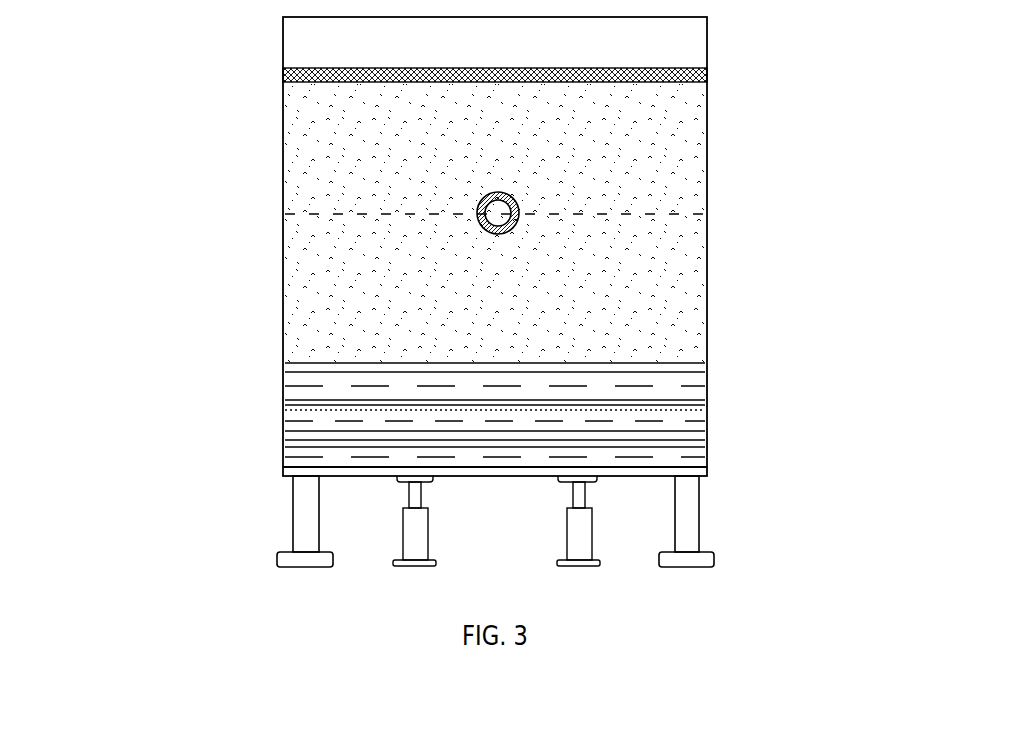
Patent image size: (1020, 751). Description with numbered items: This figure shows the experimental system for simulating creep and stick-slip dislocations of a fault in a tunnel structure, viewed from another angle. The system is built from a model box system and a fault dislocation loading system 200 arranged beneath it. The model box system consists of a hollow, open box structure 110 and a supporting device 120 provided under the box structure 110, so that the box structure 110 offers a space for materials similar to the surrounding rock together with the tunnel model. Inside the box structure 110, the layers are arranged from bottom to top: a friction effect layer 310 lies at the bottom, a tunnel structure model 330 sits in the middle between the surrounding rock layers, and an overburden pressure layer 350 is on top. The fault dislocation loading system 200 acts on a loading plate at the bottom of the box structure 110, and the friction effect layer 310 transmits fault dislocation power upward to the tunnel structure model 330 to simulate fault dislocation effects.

The box structure 110 is at (283, 248).
The supporting device 120 is at (689, 510).
The fault dislocation loading system 200 is at (408, 536).
The friction effect layer 310 is at (432, 388).
The tunnel structure model 330 is at (478, 228).
The overburden pressure layer 350 is at (302, 73).